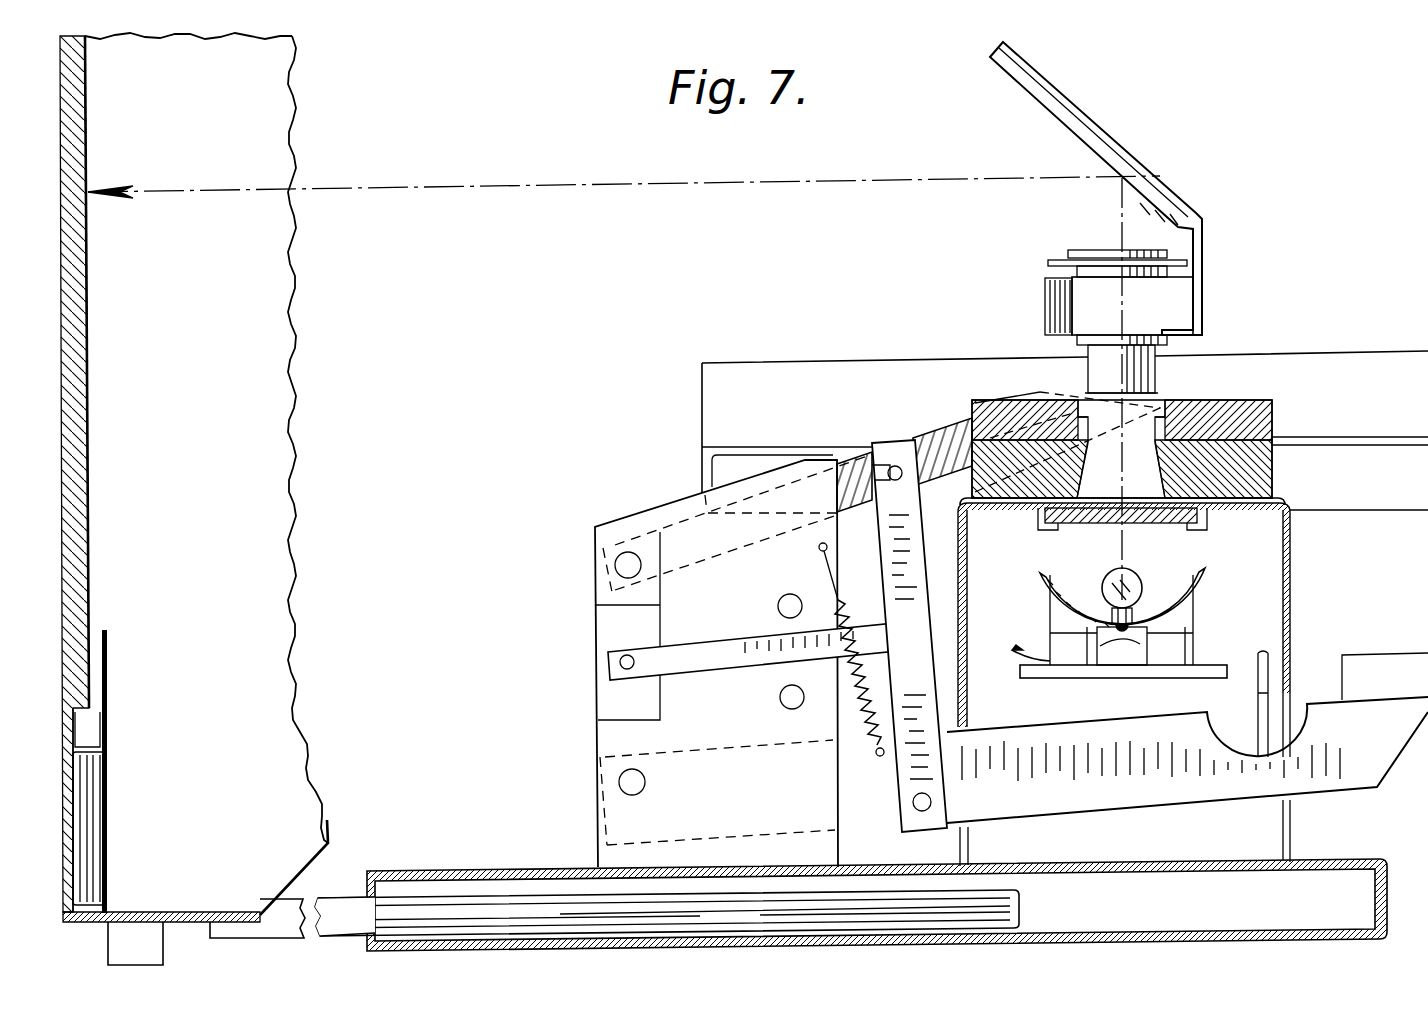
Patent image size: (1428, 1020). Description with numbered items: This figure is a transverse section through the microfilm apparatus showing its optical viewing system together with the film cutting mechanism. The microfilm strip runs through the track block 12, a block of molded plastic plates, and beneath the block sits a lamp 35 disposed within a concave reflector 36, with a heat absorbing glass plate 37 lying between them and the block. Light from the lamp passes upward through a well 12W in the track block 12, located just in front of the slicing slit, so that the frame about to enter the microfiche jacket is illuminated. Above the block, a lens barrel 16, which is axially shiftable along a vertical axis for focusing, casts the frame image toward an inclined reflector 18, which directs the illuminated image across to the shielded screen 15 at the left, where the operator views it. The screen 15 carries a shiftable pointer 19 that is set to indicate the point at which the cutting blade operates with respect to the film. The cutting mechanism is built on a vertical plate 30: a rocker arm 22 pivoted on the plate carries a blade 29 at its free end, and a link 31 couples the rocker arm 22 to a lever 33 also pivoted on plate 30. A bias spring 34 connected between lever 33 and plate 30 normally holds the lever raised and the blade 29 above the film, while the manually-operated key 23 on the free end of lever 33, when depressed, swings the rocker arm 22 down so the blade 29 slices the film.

The track block 12 is at (1262, 410).
The well 12W is at (1162, 406).
The shielded screen 15 is at (90, 497).
The lens barrel 16 is at (1182, 302).
The inclined reflector 18 is at (1165, 183).
The shiftable pointer 19 is at (107, 722).
The rocker arm 22 is at (933, 428).
The manually-operated key 23 is at (1378, 655).
The blade 29 is at (1062, 396).
The vertical plate 30 is at (598, 748).
The link 31 is at (892, 563).
The lever 33 is at (1113, 707).
The bias spring 34 is at (860, 705).
The lamp 35 is at (1112, 582).
The concave reflector 36 is at (1203, 585).
The heat absorbing glass plate 37 is at (1173, 523).